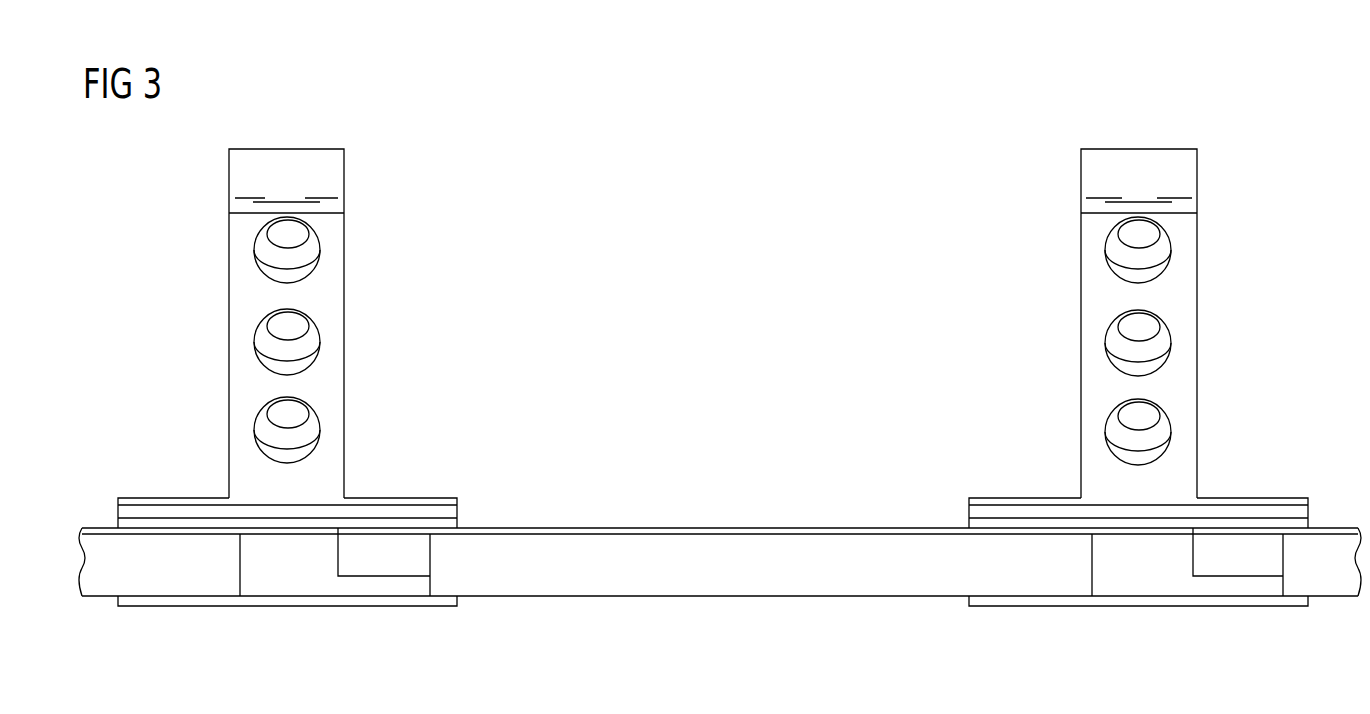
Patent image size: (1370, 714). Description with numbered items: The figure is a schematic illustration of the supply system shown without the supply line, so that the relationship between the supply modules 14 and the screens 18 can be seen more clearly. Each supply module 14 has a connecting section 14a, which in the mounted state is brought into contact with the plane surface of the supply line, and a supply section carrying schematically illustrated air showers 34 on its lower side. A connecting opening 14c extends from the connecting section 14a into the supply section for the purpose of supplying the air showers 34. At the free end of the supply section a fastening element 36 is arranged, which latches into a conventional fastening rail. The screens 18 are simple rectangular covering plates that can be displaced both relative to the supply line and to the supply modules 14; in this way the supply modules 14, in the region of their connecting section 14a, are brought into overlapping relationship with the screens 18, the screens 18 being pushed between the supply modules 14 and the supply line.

The supply module 14 is at (325, 297).
The connecting section 14a is at (431, 498).
The connecting opening 14c is at (368, 583).
The screen 18 is at (103, 543).
The air shower 34 is at (281, 416).
The fastening element 36 is at (284, 168).